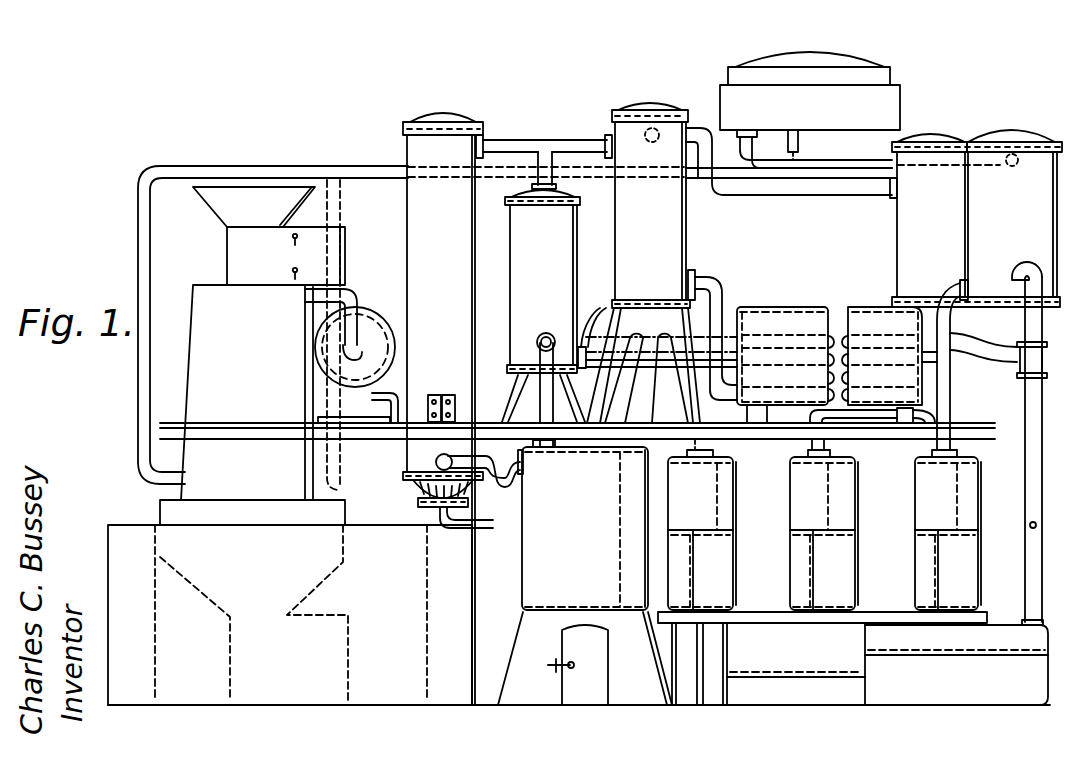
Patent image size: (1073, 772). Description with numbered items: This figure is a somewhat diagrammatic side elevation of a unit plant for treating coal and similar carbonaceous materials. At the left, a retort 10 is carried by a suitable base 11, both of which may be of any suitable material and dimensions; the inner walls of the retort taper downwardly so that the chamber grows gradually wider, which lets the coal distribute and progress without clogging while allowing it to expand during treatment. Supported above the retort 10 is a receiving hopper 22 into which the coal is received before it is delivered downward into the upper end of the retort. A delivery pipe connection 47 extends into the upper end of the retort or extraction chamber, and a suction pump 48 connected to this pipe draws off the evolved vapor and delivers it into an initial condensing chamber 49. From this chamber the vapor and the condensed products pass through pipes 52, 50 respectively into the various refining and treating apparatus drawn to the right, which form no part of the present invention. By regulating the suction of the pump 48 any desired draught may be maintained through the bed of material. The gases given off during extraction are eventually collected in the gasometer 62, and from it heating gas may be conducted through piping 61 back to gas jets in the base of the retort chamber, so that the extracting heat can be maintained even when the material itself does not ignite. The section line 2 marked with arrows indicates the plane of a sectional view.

The section line 2- 2 is at (183, 150).
The retort 10 is at (195, 380).
The base 11 is at (183, 696).
The receiving hopper 22 is at (212, 210).
The delivery pipe connection 47 is at (338, 303).
The suction pump 48 is at (368, 332).
The initial condensing chamber 49 is at (407, 187).
The pipe 50 is at (507, 497).
The pipe 52 is at (517, 140).
The piping 61 is at (138, 240).
The gasometer 62 is at (888, 112).